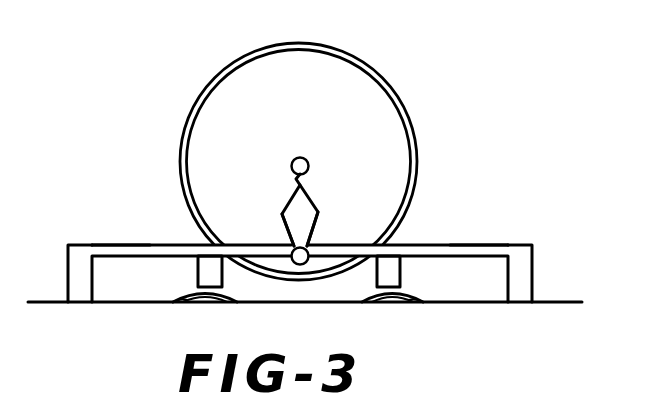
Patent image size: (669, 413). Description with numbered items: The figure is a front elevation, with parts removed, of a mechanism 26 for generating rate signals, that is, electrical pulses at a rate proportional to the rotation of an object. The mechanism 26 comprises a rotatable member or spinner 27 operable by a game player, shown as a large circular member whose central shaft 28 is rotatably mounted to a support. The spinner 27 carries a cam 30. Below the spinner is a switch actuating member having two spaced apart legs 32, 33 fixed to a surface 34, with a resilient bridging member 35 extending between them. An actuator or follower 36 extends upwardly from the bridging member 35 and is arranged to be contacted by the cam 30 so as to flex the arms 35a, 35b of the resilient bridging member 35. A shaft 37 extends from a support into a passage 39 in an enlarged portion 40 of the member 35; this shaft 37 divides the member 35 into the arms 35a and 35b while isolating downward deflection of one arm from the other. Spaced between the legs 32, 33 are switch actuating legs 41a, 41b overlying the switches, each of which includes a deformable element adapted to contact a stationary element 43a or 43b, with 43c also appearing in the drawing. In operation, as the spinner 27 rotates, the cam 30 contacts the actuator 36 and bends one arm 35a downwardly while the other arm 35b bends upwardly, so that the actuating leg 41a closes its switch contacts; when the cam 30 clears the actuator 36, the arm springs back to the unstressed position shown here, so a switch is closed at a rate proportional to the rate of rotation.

The mechanism 26 is at (420, 118).
The spinner 27 is at (362, 63).
The central shaft 28 is at (309, 163).
The cam 30 is at (293, 178).
The leg 32 is at (535, 265).
The leg 33 is at (62, 262).
The surface 34 is at (582, 302).
The resilient bridging member 35 is at (329, 263).
The arm 35a is at (420, 247).
The arm 35b is at (148, 245).
The actuator 36 is at (318, 223).
The shaft 37 is at (290, 238).
The passage 39 is at (302, 265).
The enlarged portion 40 is at (285, 262).
The switch actuating leg 41a is at (400, 278).
The switch actuating leg 41b is at (198, 278).
The stationary element 43a is at (395, 305).
The stationary element 43b is at (208, 306).
The pad edge 43c is at (174, 304).